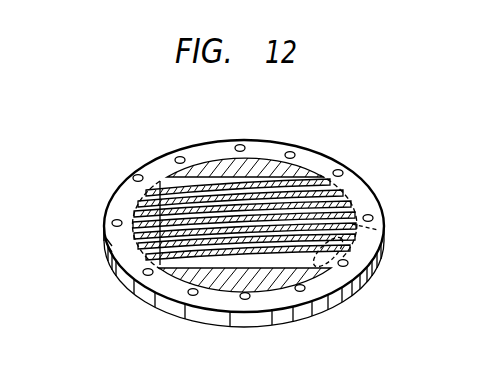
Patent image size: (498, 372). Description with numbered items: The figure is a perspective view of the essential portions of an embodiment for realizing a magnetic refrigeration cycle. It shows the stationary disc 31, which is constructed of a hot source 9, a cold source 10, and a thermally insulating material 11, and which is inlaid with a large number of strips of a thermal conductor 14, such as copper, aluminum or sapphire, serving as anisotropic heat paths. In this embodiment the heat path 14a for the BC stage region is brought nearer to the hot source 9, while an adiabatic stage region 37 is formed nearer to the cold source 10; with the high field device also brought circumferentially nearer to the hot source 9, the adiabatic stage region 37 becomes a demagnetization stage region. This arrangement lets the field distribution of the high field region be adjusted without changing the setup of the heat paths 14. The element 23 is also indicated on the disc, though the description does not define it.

The hot source 9 is at (205, 168).
The cold source 10 is at (222, 281).
The thermally insulating material 11 is at (350, 186).
The thermal conductor strips 14 is at (140, 208).
The heat path for the BC stage region 14a is at (362, 201).
The disc 23 is at (106, 256).
The stationary disc 31 is at (355, 280).
The adiabatic stage region 37 is at (378, 230).